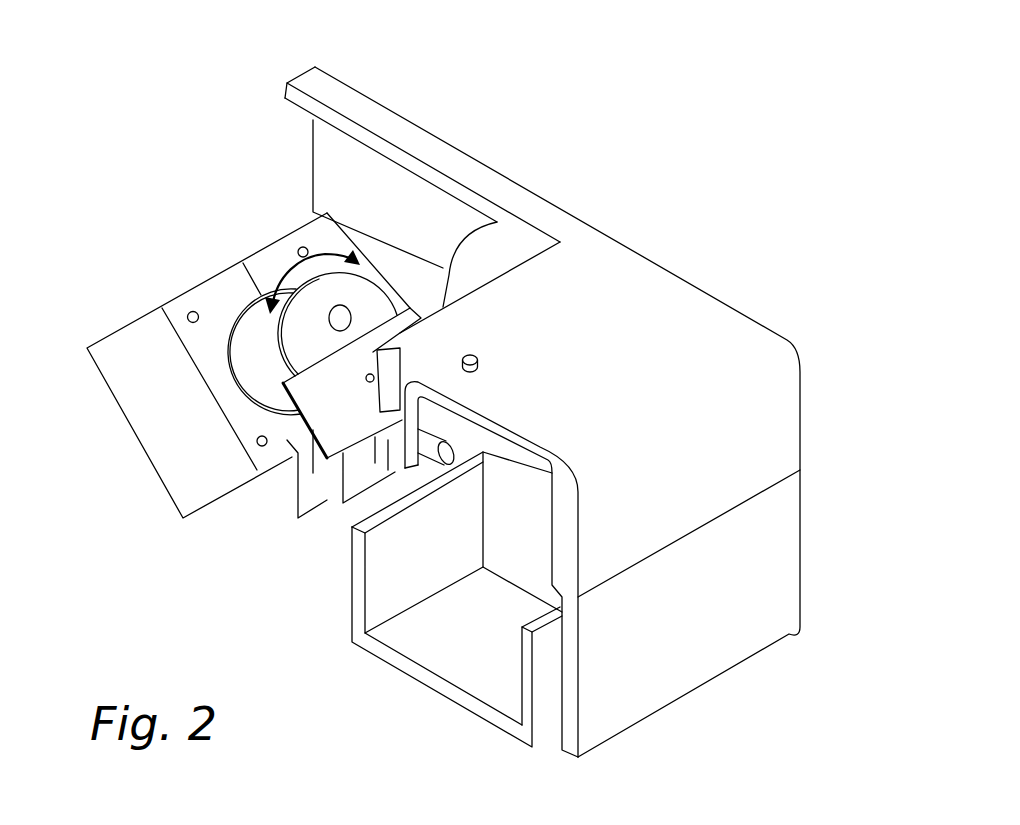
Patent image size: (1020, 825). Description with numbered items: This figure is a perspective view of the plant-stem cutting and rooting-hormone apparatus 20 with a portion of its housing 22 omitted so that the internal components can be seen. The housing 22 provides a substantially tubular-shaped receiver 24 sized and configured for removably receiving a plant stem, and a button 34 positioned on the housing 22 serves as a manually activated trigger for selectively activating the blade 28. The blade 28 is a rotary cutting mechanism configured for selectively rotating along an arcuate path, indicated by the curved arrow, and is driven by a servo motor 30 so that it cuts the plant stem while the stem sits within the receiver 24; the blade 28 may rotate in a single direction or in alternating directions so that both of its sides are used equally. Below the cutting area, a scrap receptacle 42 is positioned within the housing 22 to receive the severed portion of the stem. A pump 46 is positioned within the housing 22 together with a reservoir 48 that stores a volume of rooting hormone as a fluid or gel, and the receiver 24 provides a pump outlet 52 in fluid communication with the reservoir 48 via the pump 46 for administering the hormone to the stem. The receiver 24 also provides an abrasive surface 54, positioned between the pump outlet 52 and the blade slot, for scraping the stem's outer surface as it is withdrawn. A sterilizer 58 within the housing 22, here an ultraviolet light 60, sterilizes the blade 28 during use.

The apparatus 20 is at (456, 103).
The housing 22 is at (633, 281).
The receiver 24 is at (408, 360).
The blade 28 is at (316, 392).
The servo motor 30 is at (222, 297).
The button 34 is at (477, 360).
The scrap receptacle 42 is at (447, 647).
The pump 46 is at (500, 261).
The reservoir 48 is at (371, 357).
The pump outlet 52 is at (323, 505).
The abrasive surface 54 is at (401, 400).
The sterilizer 58 is at (436, 478).
The ultraviolet light 60 is at (428, 437).